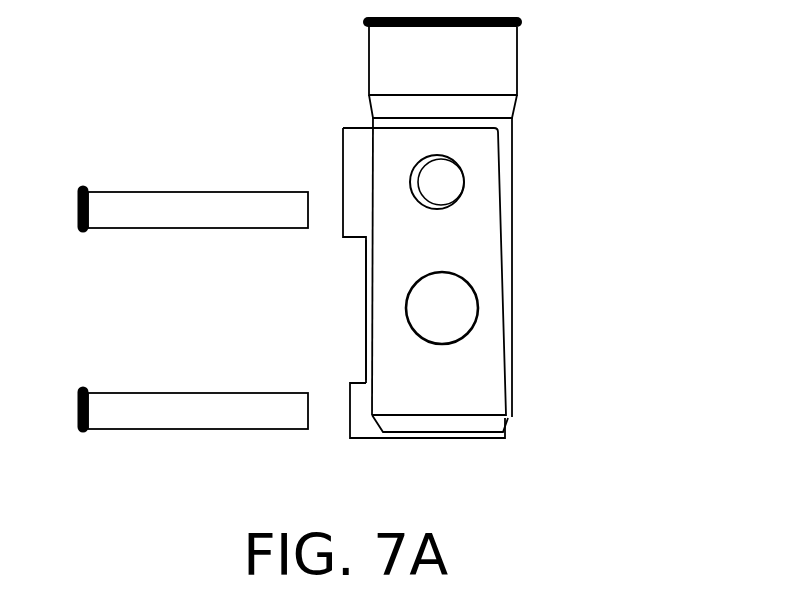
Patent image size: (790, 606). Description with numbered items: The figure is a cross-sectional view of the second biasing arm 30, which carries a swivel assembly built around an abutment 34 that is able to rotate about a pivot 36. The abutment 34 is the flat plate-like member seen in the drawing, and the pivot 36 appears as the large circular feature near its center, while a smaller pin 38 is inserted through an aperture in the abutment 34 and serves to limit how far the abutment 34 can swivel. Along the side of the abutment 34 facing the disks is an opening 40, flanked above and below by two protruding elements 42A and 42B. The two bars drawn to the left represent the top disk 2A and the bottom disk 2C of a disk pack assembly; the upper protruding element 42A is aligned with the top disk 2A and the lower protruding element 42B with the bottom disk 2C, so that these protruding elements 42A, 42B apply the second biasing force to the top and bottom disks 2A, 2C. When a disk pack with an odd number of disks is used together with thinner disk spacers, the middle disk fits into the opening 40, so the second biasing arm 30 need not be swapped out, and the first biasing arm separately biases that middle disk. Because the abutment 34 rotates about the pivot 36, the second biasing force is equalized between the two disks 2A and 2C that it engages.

The second biasing arm 30 is at (575, 63).
The abutment 34 is at (461, 242).
The pivot 36 is at (461, 307).
The pin 38 is at (452, 178).
The opening 40 is at (343, 299).
The protruding element 42A is at (358, 140).
The protruding element 42B is at (360, 415).
The top disk 2A is at (178, 192).
The bottom disk 2C is at (192, 430).